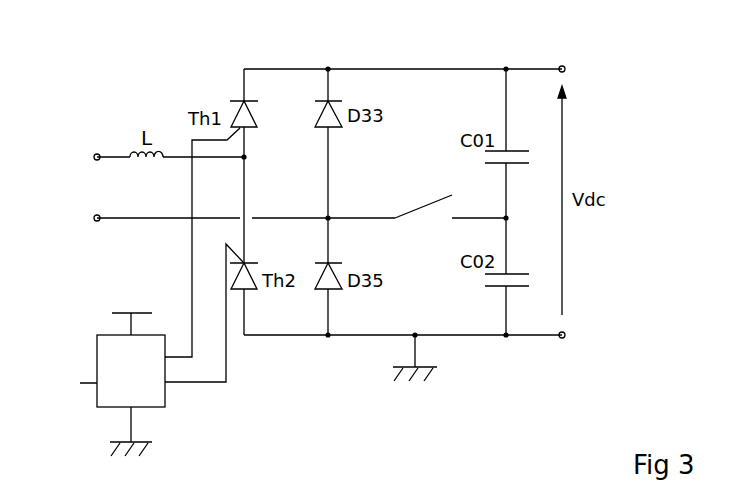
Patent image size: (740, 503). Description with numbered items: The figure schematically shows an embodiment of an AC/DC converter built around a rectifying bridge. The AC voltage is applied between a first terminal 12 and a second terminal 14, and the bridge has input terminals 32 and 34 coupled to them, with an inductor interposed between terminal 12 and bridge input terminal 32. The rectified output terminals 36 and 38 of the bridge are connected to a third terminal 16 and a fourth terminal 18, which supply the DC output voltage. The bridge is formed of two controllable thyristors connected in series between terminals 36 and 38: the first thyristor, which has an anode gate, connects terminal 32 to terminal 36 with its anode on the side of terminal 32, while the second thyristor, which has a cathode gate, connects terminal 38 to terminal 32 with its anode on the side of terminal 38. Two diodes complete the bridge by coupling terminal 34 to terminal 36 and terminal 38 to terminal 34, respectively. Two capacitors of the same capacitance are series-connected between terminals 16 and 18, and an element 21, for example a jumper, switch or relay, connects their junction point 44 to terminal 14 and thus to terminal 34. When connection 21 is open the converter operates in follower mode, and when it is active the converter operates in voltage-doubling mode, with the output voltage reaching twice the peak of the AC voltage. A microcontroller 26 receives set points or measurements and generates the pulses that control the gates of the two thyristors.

The first terminal 12 is at (94, 156).
The second terminal 14 is at (94, 217).
The third terminal 16 is at (566, 69).
The fourth terminal 18 is at (566, 336).
The connection element 21 is at (419, 206).
The microcontroller 26 is at (97, 350).
The bridge input terminal 32 is at (246, 159).
The bridge input terminal 34 is at (330, 217).
The rectified output terminal 36 is at (330, 68).
The rectified output terminal 38 is at (328, 338).
The junction point 44 is at (507, 220).